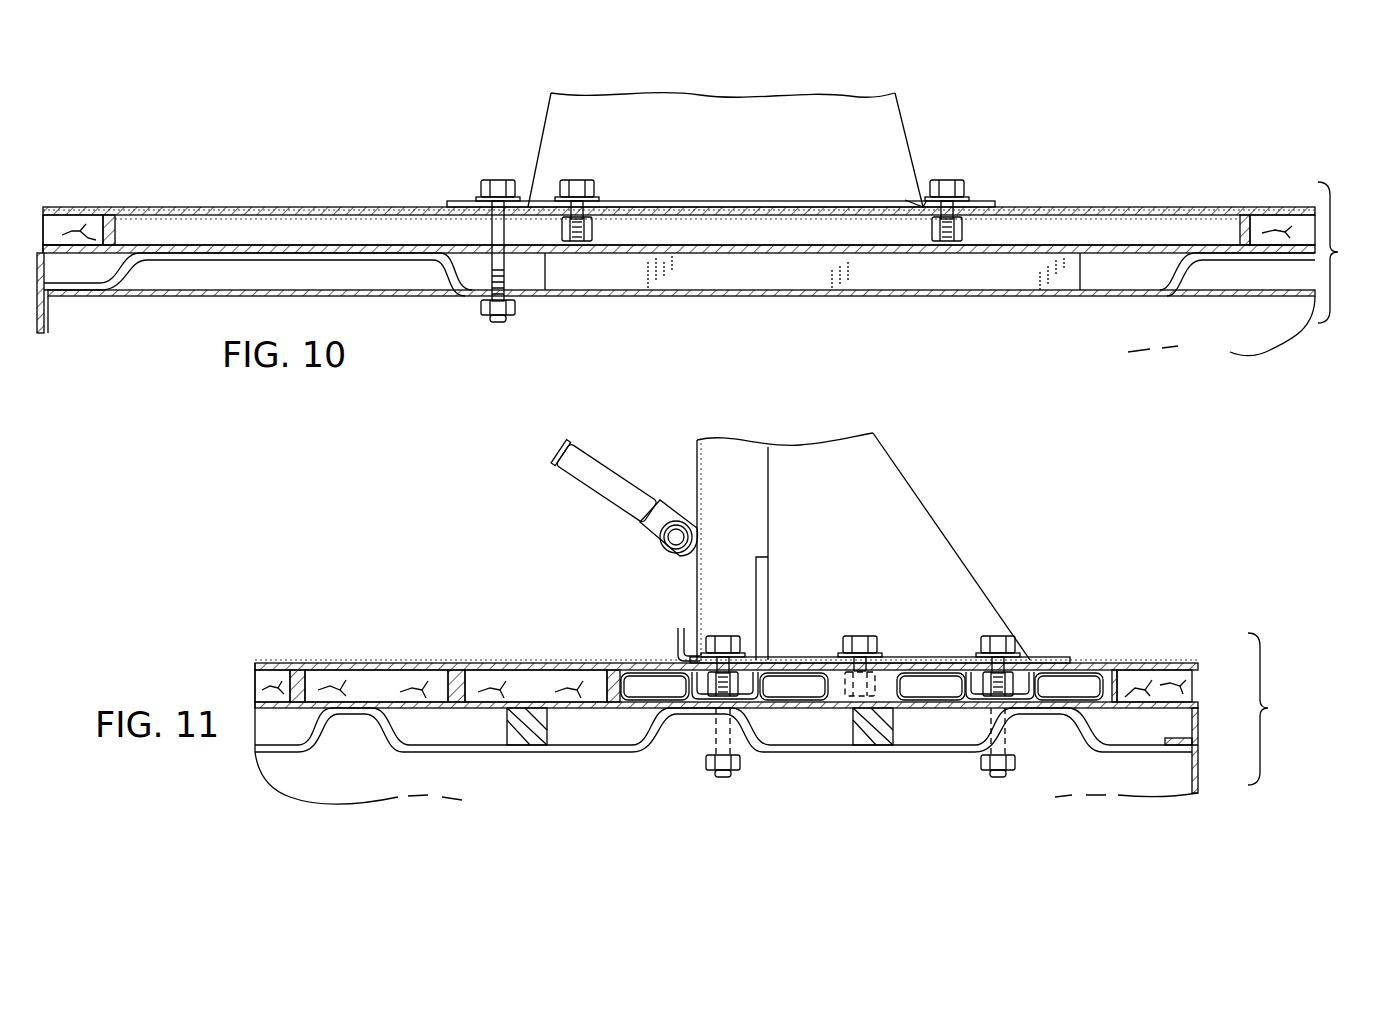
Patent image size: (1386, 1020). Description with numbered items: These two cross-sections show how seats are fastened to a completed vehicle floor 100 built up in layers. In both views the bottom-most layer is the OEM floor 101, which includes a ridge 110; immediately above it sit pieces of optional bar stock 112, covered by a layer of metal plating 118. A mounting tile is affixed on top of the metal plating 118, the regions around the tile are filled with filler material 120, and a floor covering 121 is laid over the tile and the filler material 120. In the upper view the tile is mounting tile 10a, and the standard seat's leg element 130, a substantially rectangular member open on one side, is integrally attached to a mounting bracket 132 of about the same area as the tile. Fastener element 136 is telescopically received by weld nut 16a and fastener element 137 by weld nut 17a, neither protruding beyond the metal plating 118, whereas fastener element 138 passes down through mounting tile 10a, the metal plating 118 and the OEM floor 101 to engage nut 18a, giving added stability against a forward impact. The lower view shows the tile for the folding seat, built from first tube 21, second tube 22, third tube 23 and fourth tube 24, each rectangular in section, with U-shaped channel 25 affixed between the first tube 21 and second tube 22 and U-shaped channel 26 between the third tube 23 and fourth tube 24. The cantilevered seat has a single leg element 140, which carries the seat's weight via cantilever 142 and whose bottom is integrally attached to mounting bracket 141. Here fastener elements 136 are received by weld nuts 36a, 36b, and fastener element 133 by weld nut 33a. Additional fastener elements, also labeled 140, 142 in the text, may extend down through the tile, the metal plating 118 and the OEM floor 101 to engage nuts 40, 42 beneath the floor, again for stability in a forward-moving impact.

In FIG. 10, the vehicle floor 100 is at (1349, 252).
In FIG. 11, the vehicle floor 100 is at (1279, 709).
In FIG. 10, the mounting tile 10a is at (232, 225).
In FIG. 10, the filler material 120 is at (55, 218).
In FIG. 11, the filler material 120 is at (383, 677).
In FIG. 11, the floor covering 121 is at (458, 675).
In FIG. 10, the metal plating 118 is at (705, 248).
In FIG. 11, the metal plating 118 is at (578, 713).
In FIG. 10, the ridge 110 is at (370, 254).
In FIG. 11, the ridge 110 is at (723, 715).
In FIG. 10, the OEM floor 101 is at (822, 295).
In FIG. 10, the bar stock 112 is at (568, 275).
In FIG. 11, the bar stock 112 is at (528, 728).
In FIG. 10, the weld nut 17a is at (593, 228).
In FIG. 10, the mounting bracket 132 is at (462, 203).
In FIG. 10, the leg element 130 is at (710, 113).
In FIG. 10, the weld nut 16a is at (923, 207).
In FIG. 10, the fastener element 138 is at (505, 273).
In FIG. 10, the nut 18a is at (495, 308).
In FIG. 10, the fastener element 137 is at (577, 188).
In FIG. 10, the fastener element 136 is at (947, 188).
In FIG. 11, the fastener element 136 is at (722, 642).
In FIG. 11, the fourth tube 24 is at (650, 683).
In FIG. 11, the third tube 23 is at (790, 685).
In FIG. 11, the second tube 22 is at (922, 683).
In FIG. 11, the first tube 21 is at (1070, 684).
In FIG. 11, the weld nut 36b is at (743, 678).
In FIG. 11, the weld nut 36a is at (1038, 662).
In FIG. 11, the mounting bracket 141 is at (1070, 662).
In FIG. 11, the U-shaped channel 26 is at (733, 677).
In FIG. 11, the U-shaped channel 25 is at (1045, 688).
In FIG. 11, the fastener element 133 is at (863, 642).
In FIG. 11, the weld nut 33a is at (887, 670).
In FIG. 11, the nut 40 is at (727, 768).
In FIG. 11, the nut 42 is at (1000, 765).
In FIG. 11, the leg element 140 is at (737, 450).
In FIG. 11, the cantilever 142 is at (605, 488).